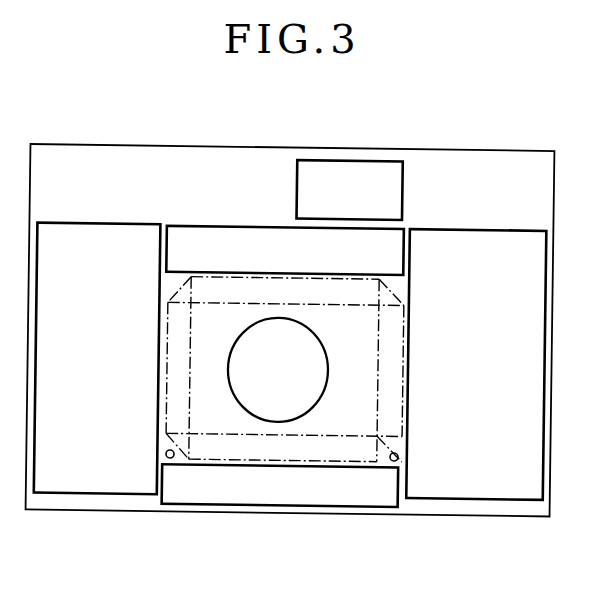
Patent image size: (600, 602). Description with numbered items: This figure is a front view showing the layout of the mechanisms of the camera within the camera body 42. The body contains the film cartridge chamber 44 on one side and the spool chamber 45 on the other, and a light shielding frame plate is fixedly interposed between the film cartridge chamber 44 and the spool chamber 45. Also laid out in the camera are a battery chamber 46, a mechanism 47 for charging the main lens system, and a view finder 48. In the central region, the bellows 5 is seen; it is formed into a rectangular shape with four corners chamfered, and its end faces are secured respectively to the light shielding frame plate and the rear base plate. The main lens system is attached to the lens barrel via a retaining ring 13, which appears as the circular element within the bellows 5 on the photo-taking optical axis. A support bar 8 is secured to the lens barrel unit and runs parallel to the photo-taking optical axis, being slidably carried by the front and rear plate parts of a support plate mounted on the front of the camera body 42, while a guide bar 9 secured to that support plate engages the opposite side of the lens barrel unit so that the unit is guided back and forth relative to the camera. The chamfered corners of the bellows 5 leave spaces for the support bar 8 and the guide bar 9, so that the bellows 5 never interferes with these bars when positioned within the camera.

The camera body 42 is at (107, 152).
The spool chamber 45 is at (80, 483).
The film cartridge chamber 44 is at (470, 485).
The view finder 48 is at (361, 170).
The mechanism for charging the main lens system 47 is at (212, 237).
The battery chamber 46 is at (265, 495).
The bellows 5 is at (355, 455).
The retaining ring 13 is at (270, 333).
The guide bar 9 is at (173, 460).
The support bar 8 is at (392, 468).